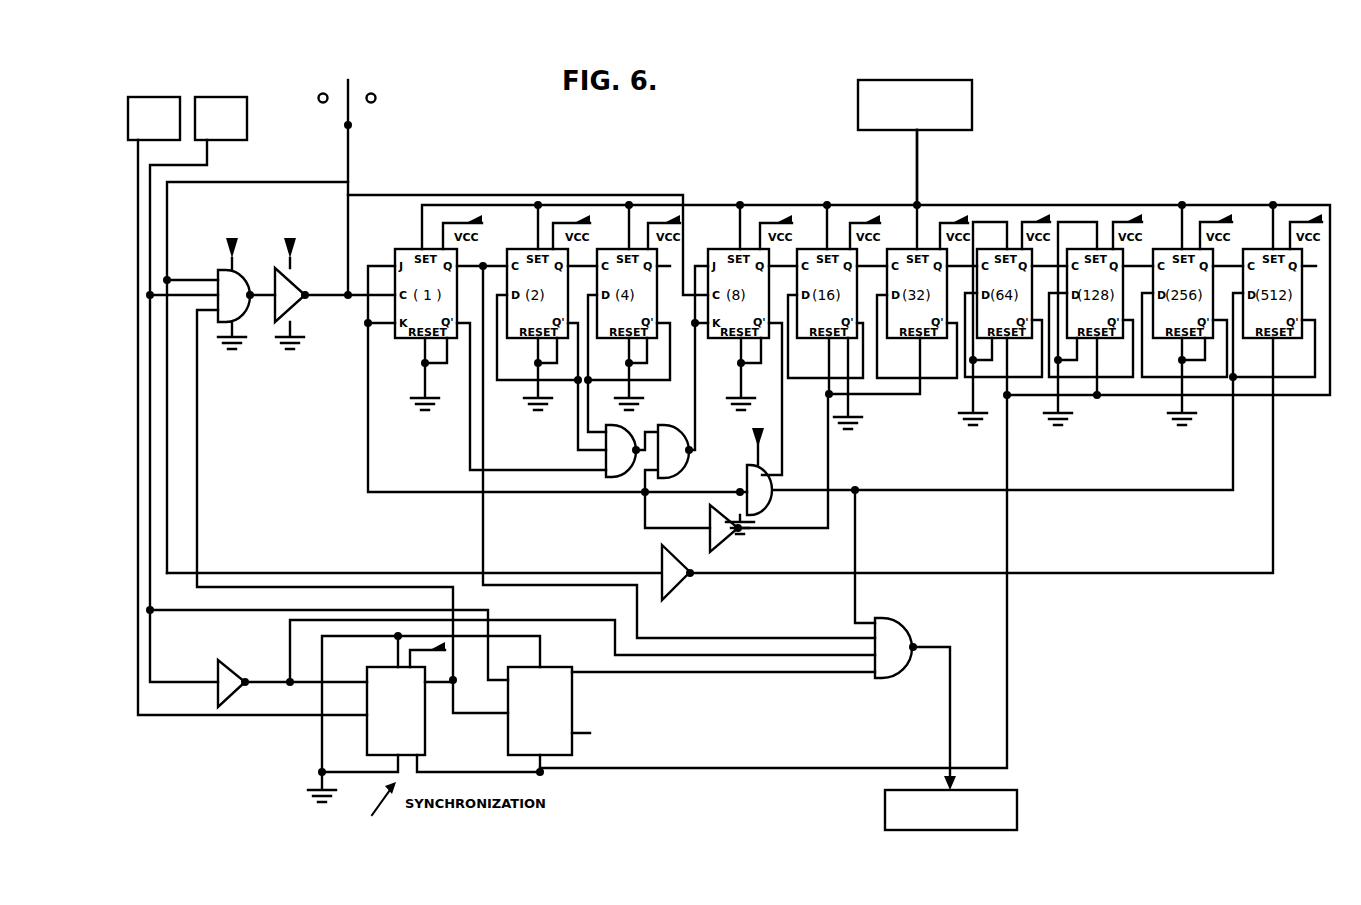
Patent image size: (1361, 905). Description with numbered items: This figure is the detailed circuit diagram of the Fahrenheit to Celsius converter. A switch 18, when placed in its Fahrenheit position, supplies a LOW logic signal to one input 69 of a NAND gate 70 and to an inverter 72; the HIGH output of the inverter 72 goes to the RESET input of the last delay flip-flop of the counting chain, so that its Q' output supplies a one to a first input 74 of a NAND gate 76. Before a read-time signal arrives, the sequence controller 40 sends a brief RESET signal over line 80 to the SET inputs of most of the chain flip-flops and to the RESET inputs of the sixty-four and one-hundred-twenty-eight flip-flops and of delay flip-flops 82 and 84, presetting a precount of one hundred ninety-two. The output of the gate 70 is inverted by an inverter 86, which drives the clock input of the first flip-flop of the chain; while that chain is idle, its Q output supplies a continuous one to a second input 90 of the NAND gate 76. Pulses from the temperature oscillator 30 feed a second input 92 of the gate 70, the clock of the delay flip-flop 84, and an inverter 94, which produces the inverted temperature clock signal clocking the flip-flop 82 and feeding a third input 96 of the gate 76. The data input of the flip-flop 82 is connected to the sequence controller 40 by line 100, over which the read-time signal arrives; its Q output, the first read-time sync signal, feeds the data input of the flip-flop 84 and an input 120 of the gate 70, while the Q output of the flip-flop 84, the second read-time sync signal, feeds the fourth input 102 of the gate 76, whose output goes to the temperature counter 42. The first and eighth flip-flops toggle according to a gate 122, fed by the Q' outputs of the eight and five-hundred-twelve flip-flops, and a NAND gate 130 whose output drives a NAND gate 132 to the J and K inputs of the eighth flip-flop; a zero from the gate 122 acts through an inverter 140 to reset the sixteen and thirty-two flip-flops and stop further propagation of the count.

The switch 18 is at (356, 86).
The temperature oscillator 30 is at (235, 134).
The sequence controller 40 is at (168, 134).
The temperature counter 42 is at (1018, 800).
The input of NAND gate 70 69 is at (187, 281).
The NAND gate 70 is at (239, 279).
The inverter 72 is at (686, 584).
The first input of NAND gate 76 74 is at (866, 620).
The NAND gate 76 is at (906, 628).
The line 80 is at (915, 165).
The delay flip-flop 82 is at (427, 733).
The delay flip-flop 84 is at (575, 703).
The inverter 86 is at (297, 286).
The second input of NAND gate 76 90 is at (826, 637).
The second input of gate 70 92 is at (178, 297).
The inverter 94 is at (233, 666).
The third input of gate 76 96 is at (838, 657).
The line 100 is at (185, 718).
The fourth input of gate 76 102 is at (852, 676).
The input of gate 70 120 is at (207, 312).
The gate 122 is at (751, 470).
The NAND gate 130 is at (617, 423).
The NAND gate 132 is at (676, 423).
The inverter 140 is at (738, 541).